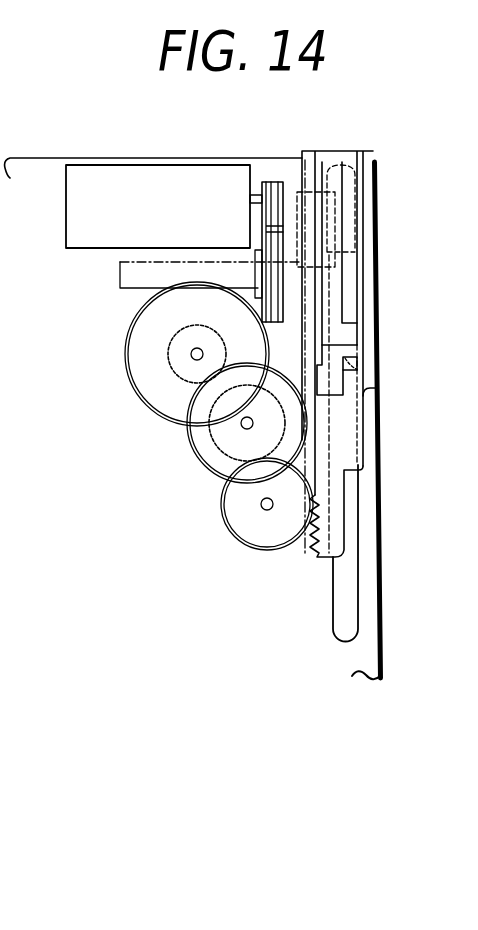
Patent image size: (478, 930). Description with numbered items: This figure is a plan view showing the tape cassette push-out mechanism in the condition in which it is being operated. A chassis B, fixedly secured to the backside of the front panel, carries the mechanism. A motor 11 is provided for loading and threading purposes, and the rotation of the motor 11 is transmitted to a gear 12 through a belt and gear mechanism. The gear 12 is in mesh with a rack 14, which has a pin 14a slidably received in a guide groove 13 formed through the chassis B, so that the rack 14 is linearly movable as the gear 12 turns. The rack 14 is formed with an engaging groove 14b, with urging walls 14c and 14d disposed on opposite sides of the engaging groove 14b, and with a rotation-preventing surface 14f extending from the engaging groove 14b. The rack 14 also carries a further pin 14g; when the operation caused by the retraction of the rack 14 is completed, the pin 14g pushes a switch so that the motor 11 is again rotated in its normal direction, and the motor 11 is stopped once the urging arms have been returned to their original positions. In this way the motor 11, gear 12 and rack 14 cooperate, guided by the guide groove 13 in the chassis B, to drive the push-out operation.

The motor 11 is at (202, 175).
The gear 12 is at (248, 527).
The guide groove 13 is at (356, 585).
The rack 14 is at (348, 433).
The pin 14a is at (377, 393).
The engaging groove 14b is at (343, 340).
The urging wall 14c is at (347, 310).
The urging wall 14d is at (355, 370).
The rotation-preventing surface 14f is at (336, 173).
The pin 14g is at (362, 267).
The chassis B is at (373, 662).